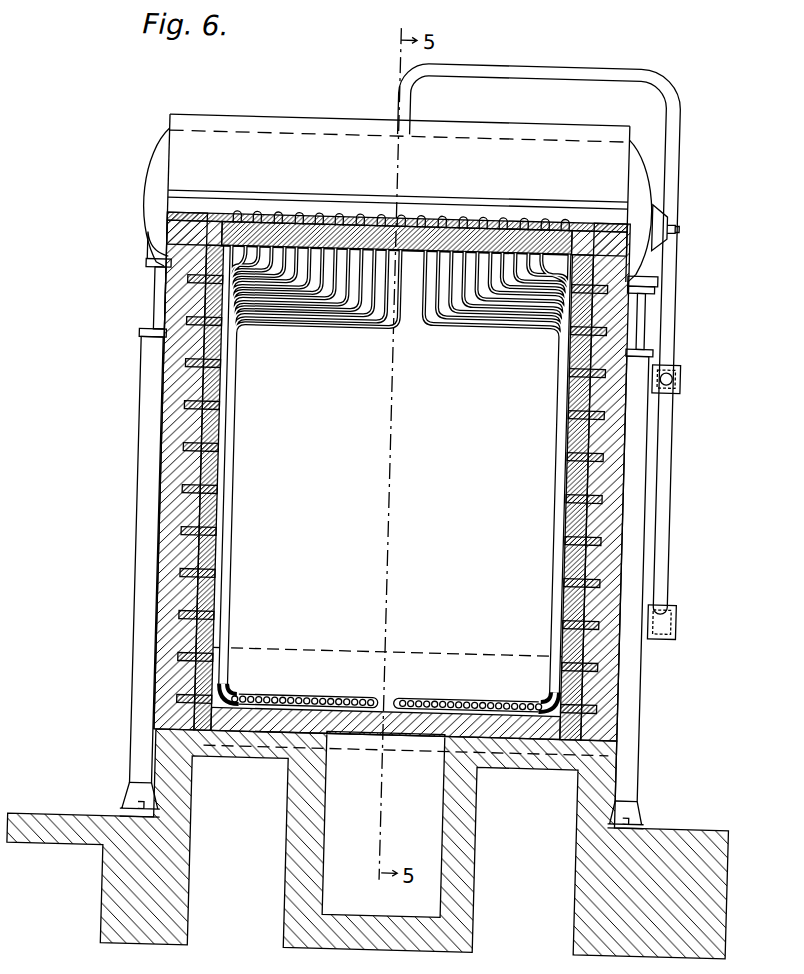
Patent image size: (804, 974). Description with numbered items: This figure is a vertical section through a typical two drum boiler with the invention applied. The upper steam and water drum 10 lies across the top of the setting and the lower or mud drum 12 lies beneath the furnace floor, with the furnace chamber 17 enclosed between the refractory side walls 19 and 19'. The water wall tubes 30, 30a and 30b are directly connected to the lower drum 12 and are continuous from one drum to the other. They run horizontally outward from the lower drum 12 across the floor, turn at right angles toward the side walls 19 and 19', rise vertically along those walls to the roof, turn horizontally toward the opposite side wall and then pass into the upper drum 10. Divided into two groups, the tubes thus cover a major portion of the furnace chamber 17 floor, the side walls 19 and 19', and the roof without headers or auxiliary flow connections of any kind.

The upper steam and water drum 10 is at (647, 160).
The lower or mud drum 12 is at (377, 748).
The furnace chamber 17 is at (495, 532).
The side wall 19 is at (132, 523).
The side wall 19' is at (671, 553).
The water wall tubes 30 is at (432, 741).
The water wall tubes 30a is at (230, 472).
The water wall tubes 30b is at (552, 478).